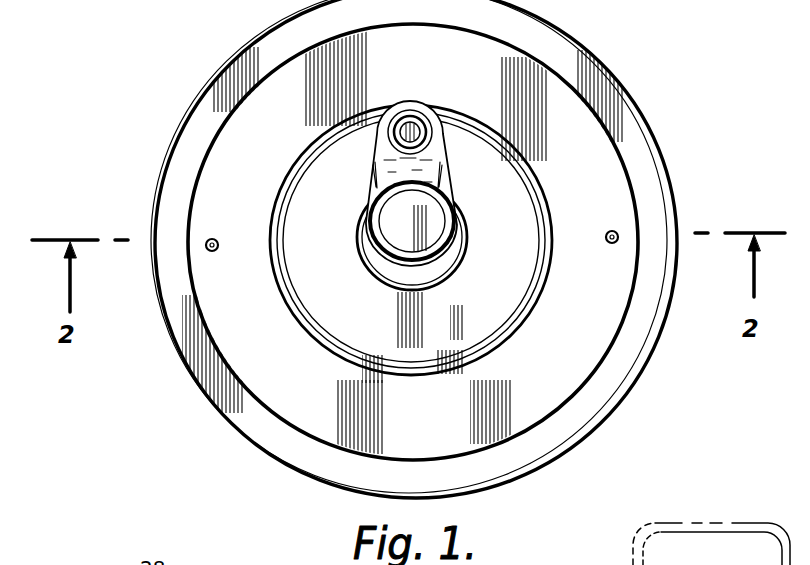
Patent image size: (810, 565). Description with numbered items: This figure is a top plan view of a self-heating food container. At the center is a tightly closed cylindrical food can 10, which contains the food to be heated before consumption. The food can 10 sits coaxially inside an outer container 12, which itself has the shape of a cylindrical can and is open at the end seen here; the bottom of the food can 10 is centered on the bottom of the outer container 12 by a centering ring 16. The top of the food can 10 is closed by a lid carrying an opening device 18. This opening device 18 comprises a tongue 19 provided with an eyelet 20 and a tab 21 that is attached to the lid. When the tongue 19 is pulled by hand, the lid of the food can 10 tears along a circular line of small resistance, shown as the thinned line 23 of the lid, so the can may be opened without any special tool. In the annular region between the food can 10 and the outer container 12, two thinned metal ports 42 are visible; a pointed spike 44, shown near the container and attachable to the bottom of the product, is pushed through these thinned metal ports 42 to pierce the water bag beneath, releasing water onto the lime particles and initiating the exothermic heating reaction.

The food can 10 is at (236, 42).
The outer container 12 is at (622, 430).
The centering ring 16 is at (440, 112).
The opening device 18 is at (453, 193).
The tongue 19 is at (366, 238).
The eyelet 20 is at (377, 210).
The tab 21 is at (412, 118).
The thinned line 23 is at (320, 346).
The thinned metal ports 42 is at (212, 250).
The spike 44 is at (682, 523).